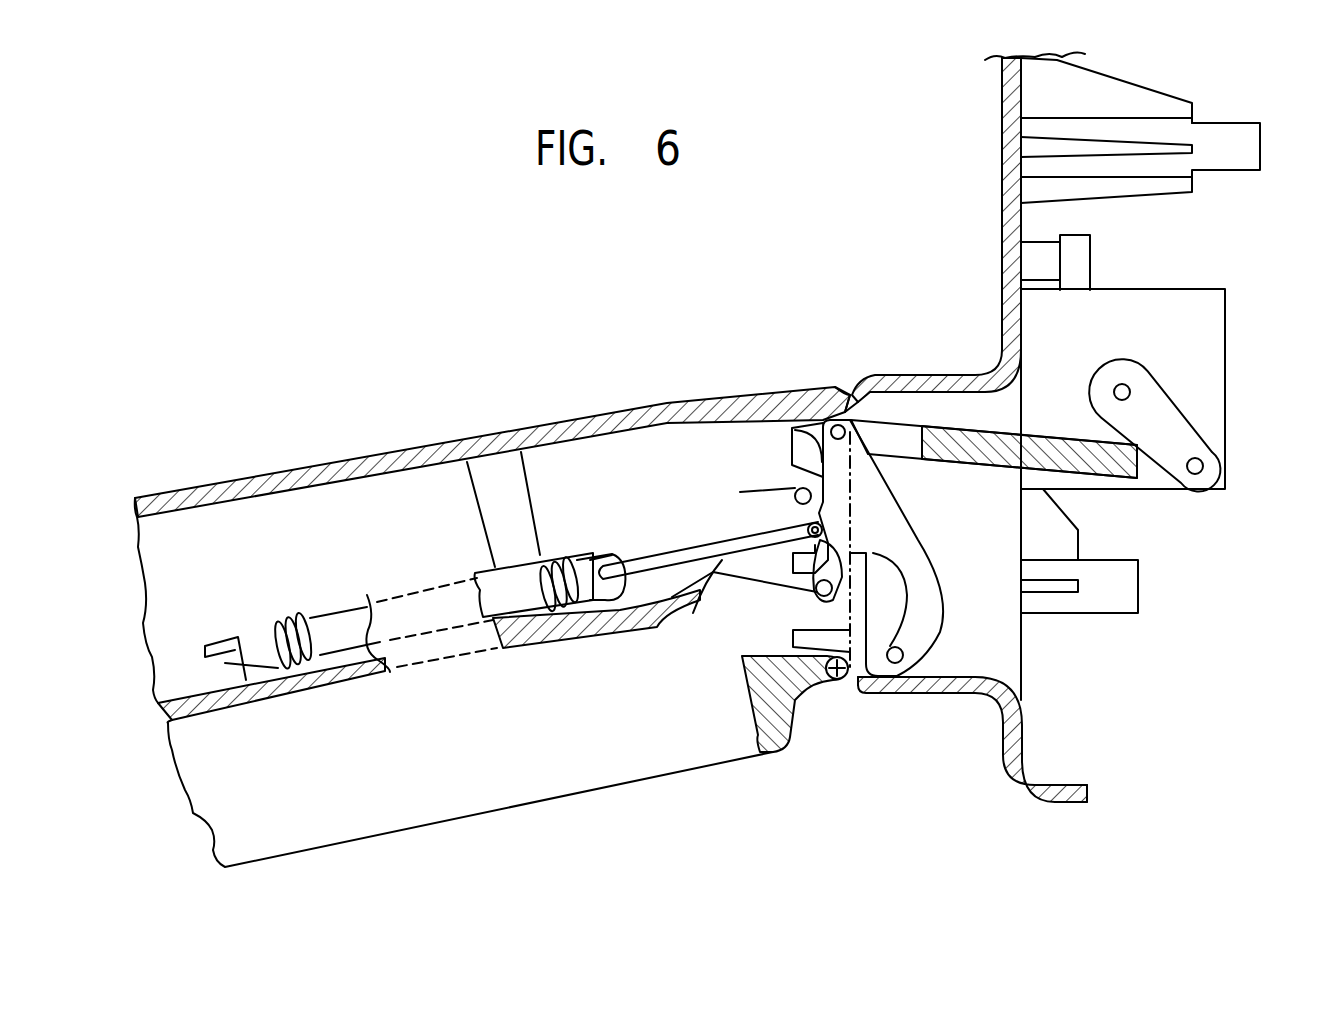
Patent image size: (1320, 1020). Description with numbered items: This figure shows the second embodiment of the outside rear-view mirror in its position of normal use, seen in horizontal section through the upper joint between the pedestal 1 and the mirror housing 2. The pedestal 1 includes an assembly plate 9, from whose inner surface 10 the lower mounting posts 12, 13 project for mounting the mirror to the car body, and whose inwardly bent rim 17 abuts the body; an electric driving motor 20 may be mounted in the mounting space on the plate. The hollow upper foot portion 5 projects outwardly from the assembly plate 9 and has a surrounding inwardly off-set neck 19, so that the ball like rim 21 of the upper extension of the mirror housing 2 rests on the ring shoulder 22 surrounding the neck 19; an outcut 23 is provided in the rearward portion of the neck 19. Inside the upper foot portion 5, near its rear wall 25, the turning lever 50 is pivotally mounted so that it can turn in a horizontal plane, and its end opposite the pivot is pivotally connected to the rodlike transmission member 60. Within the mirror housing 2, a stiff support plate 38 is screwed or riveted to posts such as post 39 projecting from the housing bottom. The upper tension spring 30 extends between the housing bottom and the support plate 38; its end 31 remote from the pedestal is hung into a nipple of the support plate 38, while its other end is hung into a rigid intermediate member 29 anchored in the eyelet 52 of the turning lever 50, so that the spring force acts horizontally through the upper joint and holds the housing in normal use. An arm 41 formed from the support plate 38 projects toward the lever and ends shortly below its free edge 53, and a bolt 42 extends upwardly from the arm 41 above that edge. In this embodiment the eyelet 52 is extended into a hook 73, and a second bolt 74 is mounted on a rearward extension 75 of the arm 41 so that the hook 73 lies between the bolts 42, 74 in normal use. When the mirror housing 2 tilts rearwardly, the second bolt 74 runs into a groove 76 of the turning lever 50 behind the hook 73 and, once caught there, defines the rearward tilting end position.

The pedestal 1 is at (1000, 103).
The mirror housing 2 is at (400, 453).
The upper foot portion 5 is at (945, 375).
The assembly plate 9 is at (1000, 195).
The inner surface 10 is at (1022, 100).
The lower mounting post 12 is at (1108, 614).
The lower mounting post 13 is at (1238, 165).
The inwardly bent rim 17 is at (1062, 805).
The neck 19 is at (792, 458).
The electric driving motor 20 is at (1226, 288).
The ball like rim 21 is at (836, 420).
The ring shoulder 22 is at (852, 393).
The outcut 23 is at (828, 690).
The rear wall 25 is at (955, 698).
The rigid intermediate member 29 is at (633, 562).
The upper tension spring 30 is at (292, 614).
The end of the upper tension spring 31 is at (266, 652).
The support plate 38 is at (222, 718).
The post 39 is at (478, 521).
The arm 41 is at (665, 630).
The bolt 42 is at (794, 492).
The turning lever 50 is at (960, 605).
The eyelet 52 is at (807, 525).
The free edge 53 is at (800, 400).
The rodlike transmission member 60 is at (1047, 440).
The hook 73 is at (720, 565).
The second bolt 74 is at (817, 592).
The rearward extension 75 is at (757, 572).
The groove 76 is at (905, 632).